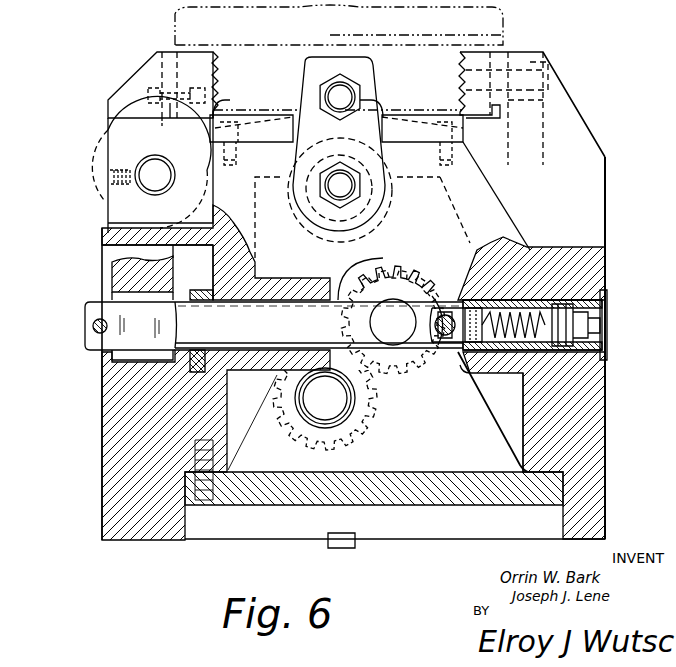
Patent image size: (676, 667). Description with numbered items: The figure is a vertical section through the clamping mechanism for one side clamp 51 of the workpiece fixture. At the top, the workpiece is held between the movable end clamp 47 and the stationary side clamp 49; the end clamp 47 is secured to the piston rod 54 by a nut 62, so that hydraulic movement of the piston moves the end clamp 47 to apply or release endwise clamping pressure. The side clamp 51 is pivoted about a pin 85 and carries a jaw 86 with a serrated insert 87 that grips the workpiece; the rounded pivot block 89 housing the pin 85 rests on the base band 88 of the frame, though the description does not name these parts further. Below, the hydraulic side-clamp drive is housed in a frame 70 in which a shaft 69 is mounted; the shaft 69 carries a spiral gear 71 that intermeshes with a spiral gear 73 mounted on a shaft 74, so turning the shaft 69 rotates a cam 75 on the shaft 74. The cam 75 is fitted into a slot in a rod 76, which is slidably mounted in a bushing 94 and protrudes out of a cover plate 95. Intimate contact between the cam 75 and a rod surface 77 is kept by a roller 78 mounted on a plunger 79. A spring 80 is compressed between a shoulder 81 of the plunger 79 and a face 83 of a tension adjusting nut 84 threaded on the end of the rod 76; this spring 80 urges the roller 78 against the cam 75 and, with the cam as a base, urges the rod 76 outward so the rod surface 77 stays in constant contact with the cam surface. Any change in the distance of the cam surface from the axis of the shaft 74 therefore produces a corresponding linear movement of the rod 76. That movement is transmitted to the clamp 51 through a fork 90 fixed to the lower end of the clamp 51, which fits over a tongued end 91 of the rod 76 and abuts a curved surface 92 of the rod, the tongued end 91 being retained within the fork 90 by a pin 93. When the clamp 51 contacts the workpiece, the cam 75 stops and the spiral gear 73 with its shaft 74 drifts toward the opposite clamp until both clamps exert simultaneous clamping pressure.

The side clamp 51 is at (115, 82).
The jaw 86 is at (157, 52).
The serrated insert 87 is at (215, 58).
The pivot block 89 is at (102, 173).
The pin 85 is at (153, 178).
The base plate 88 is at (107, 250).
The fork 90 is at (115, 272).
The curved surface 92 is at (172, 336).
The tongued end 91 is at (93, 342).
The pin 93 is at (92, 325).
The bushing 94 is at (215, 303).
The rod 76 is at (192, 317).
The cover plate 95 is at (192, 358).
The end clamp 47 is at (352, 75).
The nut 62 is at (338, 164).
The piston rod 54 is at (343, 192).
The side clamp 49 is at (543, 52).
The rod surface 77 is at (362, 262).
The spiral gear 73 is at (425, 282).
The cam 75 is at (402, 364).
The shaft 69 is at (316, 410).
The spiral gear 71 is at (357, 445).
The shoulder 81 is at (487, 300).
The plunger 79 is at (473, 350).
The shaft 74 is at (446, 350).
The roller 78 is at (449, 345).
The face 83 is at (560, 310).
The tension adjusting nut 84 is at (587, 333).
The spring 80 is at (590, 288).
The frame 70 is at (473, 443).